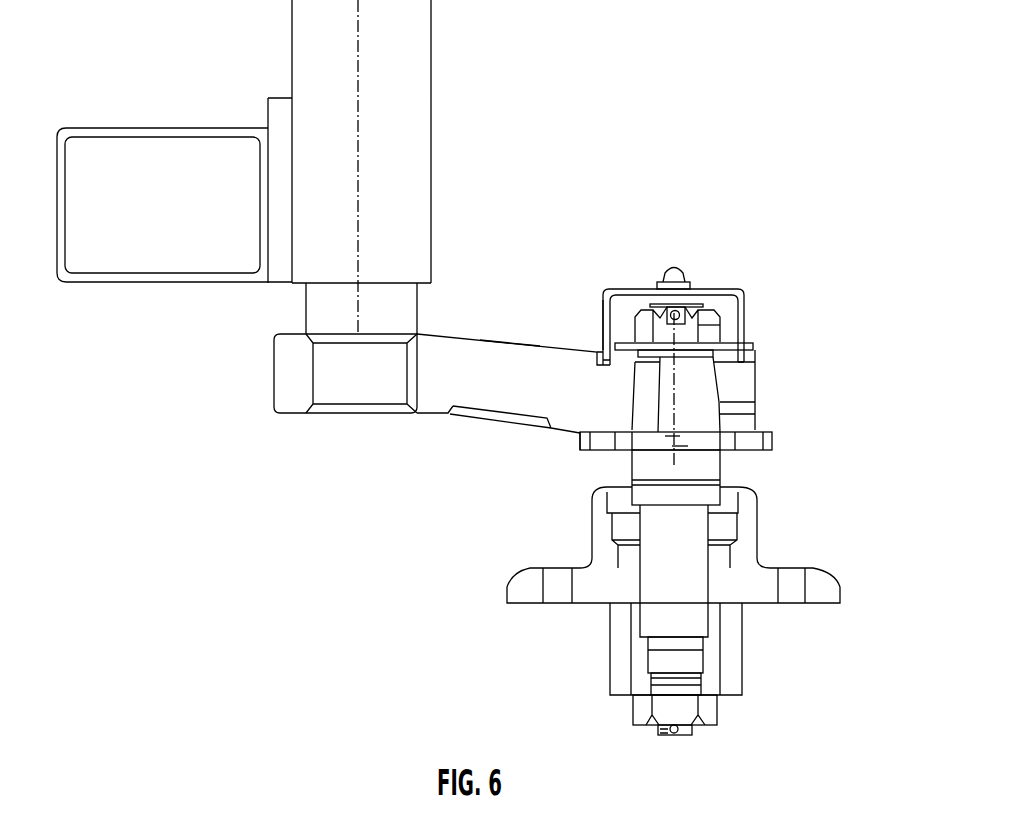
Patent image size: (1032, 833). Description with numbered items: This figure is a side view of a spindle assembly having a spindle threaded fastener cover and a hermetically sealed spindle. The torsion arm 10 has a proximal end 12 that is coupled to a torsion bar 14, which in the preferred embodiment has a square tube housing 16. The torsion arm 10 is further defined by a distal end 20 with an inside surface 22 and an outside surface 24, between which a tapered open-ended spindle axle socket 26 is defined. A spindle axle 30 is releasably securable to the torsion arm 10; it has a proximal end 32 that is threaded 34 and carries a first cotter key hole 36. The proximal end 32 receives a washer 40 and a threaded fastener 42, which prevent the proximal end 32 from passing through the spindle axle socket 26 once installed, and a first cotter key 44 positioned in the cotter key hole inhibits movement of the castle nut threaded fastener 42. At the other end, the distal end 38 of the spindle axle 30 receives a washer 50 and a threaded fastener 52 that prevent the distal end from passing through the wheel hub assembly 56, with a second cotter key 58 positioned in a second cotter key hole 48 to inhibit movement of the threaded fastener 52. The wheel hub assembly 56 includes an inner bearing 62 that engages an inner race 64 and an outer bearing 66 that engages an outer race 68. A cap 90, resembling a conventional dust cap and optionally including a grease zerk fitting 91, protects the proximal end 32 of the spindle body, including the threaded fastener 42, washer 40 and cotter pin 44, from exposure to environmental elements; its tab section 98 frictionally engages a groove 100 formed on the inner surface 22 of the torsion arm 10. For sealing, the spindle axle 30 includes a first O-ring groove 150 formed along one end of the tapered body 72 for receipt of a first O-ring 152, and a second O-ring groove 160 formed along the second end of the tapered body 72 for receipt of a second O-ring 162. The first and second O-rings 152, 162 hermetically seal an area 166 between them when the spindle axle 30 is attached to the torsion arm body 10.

The torsion arm 10 is at (443, 414).
The proximal end 12 is at (282, 414).
The torsion bar 14 is at (306, 306).
The square tube housing 16 is at (431, 137).
The distal end 20 is at (757, 365).
The inside surface 22 is at (543, 342).
The outside surface 24 is at (593, 450).
The spindle axle socket 26 is at (757, 416).
The spindle axle 30 is at (706, 467).
The proximal end 32 is at (700, 305).
The threaded portion 34 is at (683, 310).
The first cotter key hole 36 is at (680, 310).
The distal end 38 is at (694, 732).
The washer 40 is at (753, 347).
The threaded fastener 42 is at (727, 323).
The first cotter key 44 is at (675, 312).
The second cotter key hole 48 is at (668, 735).
The washer 50 is at (718, 696).
The threaded fastener 52 is at (715, 715).
The wheel hub assembly 56 is at (840, 588).
The second cotter key 58 is at (675, 733).
The inner bearing 62 is at (742, 500).
The inner race 64 is at (742, 519).
The outer bearing 66 is at (701, 683).
The outer race 68 is at (703, 667).
The tapered body 72 is at (755, 393).
The cap 90 is at (606, 288).
The grease zerk fitting 91 is at (668, 273).
The tab section 98 is at (600, 350).
The groove 100 is at (598, 366).
The first O-ring groove 150 is at (652, 368).
The first O-ring 152 is at (638, 365).
The second O-ring groove 160 is at (672, 438).
The second O-ring 162 is at (680, 446).
The sealed area 166 is at (651, 389).